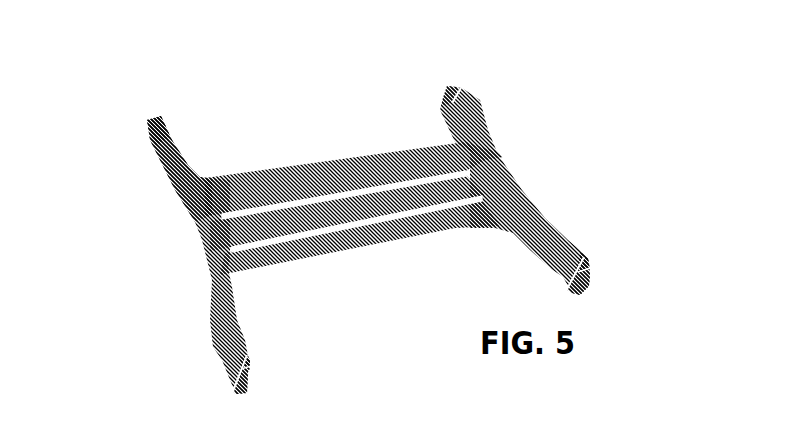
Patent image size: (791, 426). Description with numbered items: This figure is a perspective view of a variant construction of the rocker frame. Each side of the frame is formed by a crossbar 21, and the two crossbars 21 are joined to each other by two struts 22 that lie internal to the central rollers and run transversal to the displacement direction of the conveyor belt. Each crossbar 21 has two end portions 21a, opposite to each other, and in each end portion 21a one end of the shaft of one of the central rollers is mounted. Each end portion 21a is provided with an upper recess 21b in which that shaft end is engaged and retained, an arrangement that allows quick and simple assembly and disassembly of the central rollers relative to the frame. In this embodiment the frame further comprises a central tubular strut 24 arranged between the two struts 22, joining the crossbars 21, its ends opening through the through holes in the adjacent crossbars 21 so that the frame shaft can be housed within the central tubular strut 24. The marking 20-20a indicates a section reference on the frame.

The frame side member (section 20-20a) 20-20a is at (506, 148).
The crossbar 21 is at (184, 165).
The end portions 21a is at (147, 127).
The upper recess 21b is at (464, 86).
The struts 22 is at (264, 160).
The central tubular strut 24 is at (361, 193).